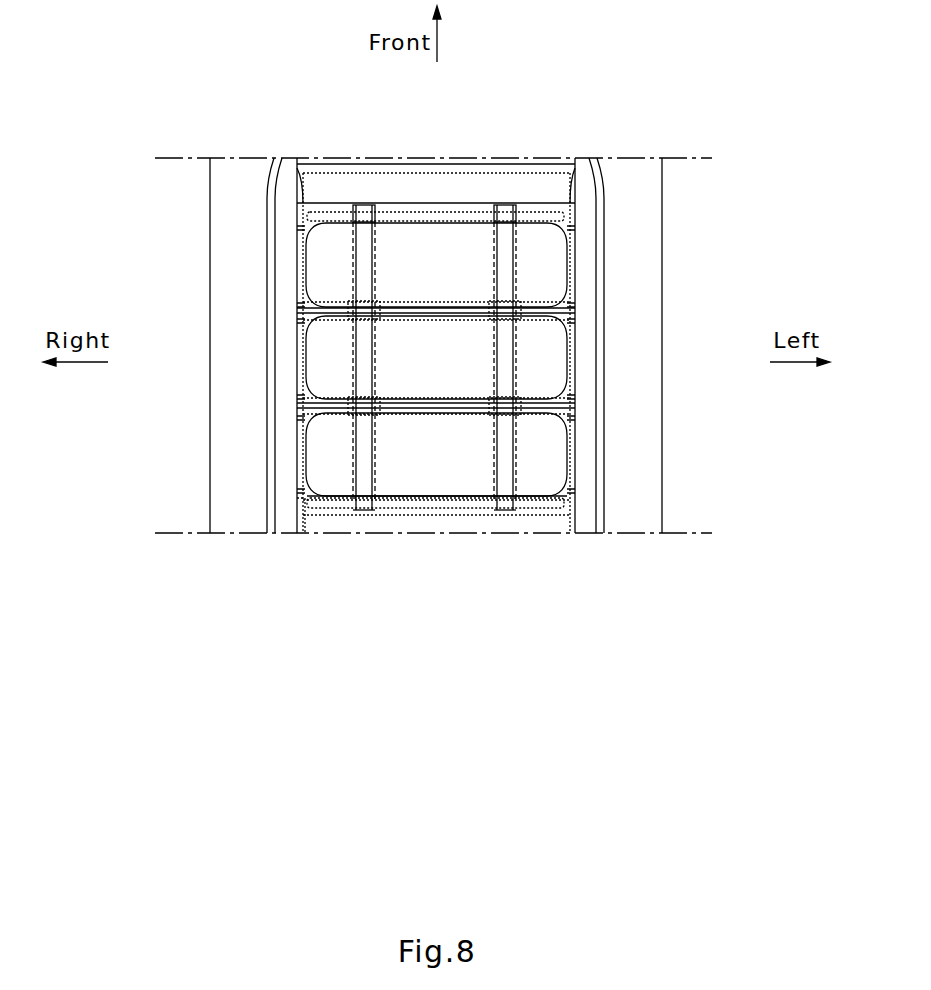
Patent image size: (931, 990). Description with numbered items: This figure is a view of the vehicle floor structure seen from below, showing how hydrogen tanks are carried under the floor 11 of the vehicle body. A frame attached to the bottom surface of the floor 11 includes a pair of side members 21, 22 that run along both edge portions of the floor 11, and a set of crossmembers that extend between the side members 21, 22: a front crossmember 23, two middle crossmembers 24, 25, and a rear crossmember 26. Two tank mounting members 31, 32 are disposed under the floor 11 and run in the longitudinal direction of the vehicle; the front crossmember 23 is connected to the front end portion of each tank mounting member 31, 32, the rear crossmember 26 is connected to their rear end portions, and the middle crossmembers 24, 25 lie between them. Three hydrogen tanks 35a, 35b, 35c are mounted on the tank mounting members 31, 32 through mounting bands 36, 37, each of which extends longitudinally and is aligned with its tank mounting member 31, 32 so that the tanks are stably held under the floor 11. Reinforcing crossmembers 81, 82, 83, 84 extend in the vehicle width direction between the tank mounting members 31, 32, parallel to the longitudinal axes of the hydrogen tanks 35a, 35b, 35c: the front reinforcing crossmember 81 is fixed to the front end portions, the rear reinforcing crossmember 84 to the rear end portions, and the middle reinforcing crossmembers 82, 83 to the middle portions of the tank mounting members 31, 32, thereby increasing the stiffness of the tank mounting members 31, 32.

The floor 11 is at (652, 357).
The side member 21 is at (284, 232).
The side member 22 is at (585, 290).
The front crossmember 23 is at (337, 212).
The middle crossmember 24 is at (310, 312).
The middle crossmember 25 is at (310, 408).
The rear crossmember 26 is at (305, 502).
The tank mounting member 31 is at (365, 205).
The tank mounting member 32 is at (505, 205).
The hydrogen tank 35a is at (553, 255).
The hydrogen tank 35b is at (547, 372).
The hydrogen tank 35c is at (550, 453).
The mounting band 36 is at (368, 216).
The mounting band 37 is at (510, 216).
The front reinforcing crossmember 81 is at (435, 212).
The middle reinforcing crossmember 82 is at (348, 309).
The middle reinforcing crossmember 83 is at (348, 403).
The rear reinforcing crossmember 84 is at (430, 500).